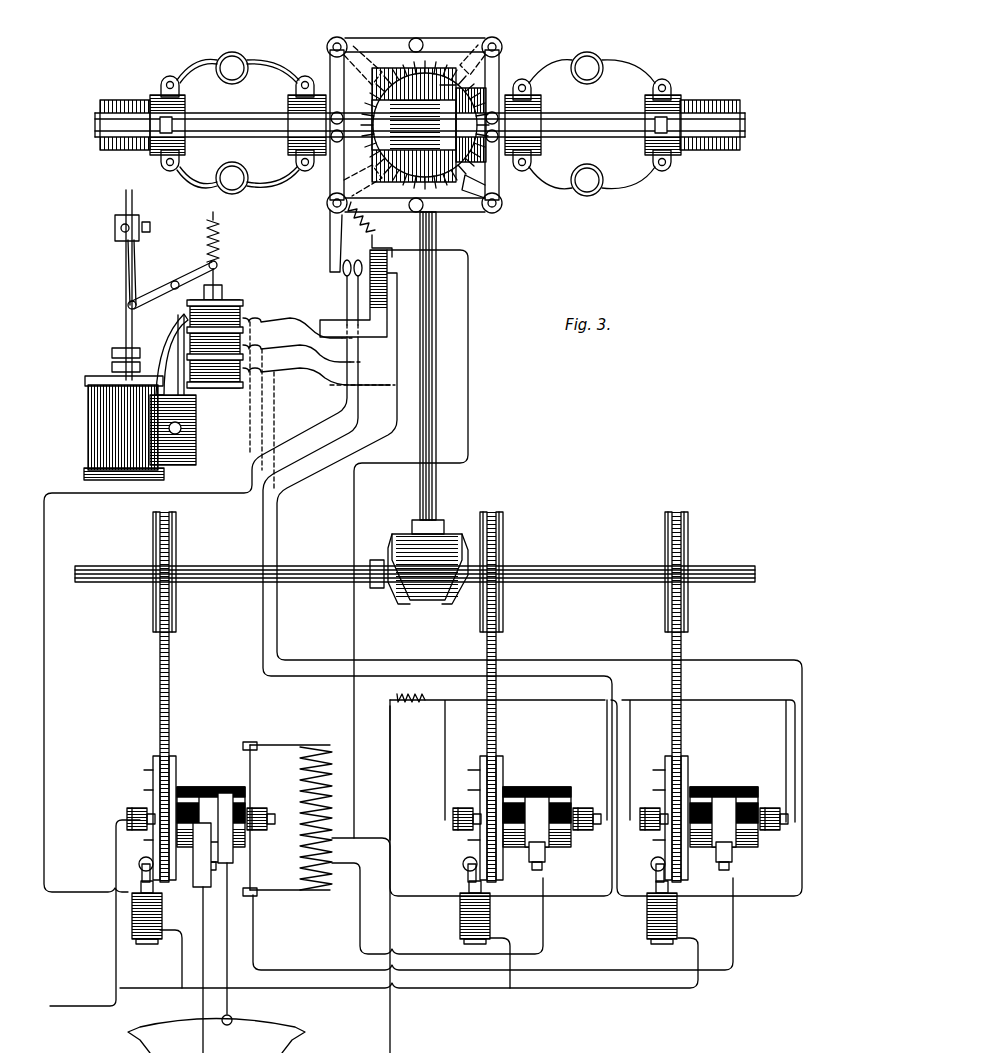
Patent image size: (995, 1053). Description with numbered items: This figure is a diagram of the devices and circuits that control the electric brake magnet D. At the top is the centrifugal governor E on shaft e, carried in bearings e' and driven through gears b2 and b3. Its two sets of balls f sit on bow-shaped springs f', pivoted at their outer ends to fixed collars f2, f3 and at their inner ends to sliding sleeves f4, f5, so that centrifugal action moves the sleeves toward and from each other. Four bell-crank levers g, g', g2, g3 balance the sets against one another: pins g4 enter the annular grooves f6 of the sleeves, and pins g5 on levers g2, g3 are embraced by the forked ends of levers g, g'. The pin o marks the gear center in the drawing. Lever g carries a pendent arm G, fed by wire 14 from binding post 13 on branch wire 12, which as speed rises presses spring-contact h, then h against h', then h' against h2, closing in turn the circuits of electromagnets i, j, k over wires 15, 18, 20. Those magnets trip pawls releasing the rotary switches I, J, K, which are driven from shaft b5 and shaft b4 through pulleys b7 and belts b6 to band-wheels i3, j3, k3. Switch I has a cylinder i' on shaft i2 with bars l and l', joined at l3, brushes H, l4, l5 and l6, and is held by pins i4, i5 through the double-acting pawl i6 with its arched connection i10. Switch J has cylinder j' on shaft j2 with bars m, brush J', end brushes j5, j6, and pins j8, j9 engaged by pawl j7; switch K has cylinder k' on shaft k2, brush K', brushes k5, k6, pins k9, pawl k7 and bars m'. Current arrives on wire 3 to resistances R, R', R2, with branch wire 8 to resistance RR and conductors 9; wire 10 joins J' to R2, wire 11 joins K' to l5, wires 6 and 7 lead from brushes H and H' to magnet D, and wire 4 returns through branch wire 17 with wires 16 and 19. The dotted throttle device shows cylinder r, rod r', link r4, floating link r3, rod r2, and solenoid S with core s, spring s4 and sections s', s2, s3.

The centrifugal governor E is at (301, 17).
The governor-shaft e is at (425, 116).
The bearings e' is at (420, 114).
The balls or weights f is at (409, 124).
The bow-shaped springs f' is at (416, 121).
The collar f2 is at (163, 95).
The collar f3 is at (668, 100).
The sliding sleeve f4 is at (290, 95).
The sliding sleeve f5 is at (535, 108).
The annular groove f6 is at (312, 80).
The bell-crank lever g' is at (354, 112).
The bell-crank lever g2 is at (500, 184).
The bell-crank lever g3 is at (492, 42).
The pins g4 is at (343, 113).
The pins g5 is at (418, 40).
The bell-crank lever g is at (342, 180).
The gear b2 is at (400, 70).
The gear b3 is at (470, 90).
The gear center o is at (428, 120).
The shaft b5 is at (436, 496).
The shaft b4 is at (580, 572).
The belt b6 is at (166, 664).
The pulley b7 is at (182, 612).
The pendent arm G is at (333, 246).
The wire 14 is at (358, 218).
The binding post or screw 13 is at (380, 248).
The spring-contact h is at (336, 298).
The second contact h' is at (352, 294).
The third contact h2 is at (380, 272).
The branch wire 12 is at (344, 712).
The wire 15 is at (342, 410).
The wire 20 is at (395, 398).
The wire 18 is at (262, 534).
The rod r' is at (121, 285).
The link r4 is at (132, 282).
The floating link r3 is at (190, 283).
The rod r2 is at (165, 318).
The cylinder r is at (124, 414).
The spring s4 is at (218, 236).
The core s is at (222, 280).
The solenoid S is at (218, 344).
The solenoid section s' is at (292, 330).
The solenoid section s2 is at (240, 372).
The solenoid section s3 is at (222, 372).
The rotary switch I is at (202, 753).
The band wheel or pulley i3 is at (172, 760).
The contact-bars l is at (222, 815).
The contact-bars l' is at (199, 807).
The drum or cylinder i' is at (225, 810).
The brush H is at (213, 855).
The pins i5 is at (137, 815).
The shaft i2 is at (261, 808).
The pins i4 is at (142, 860).
The arched connection i10 is at (140, 866).
The double-acting pawl i6 is at (139, 877).
The electromagnet i is at (152, 912).
The brush l6 is at (115, 842).
The wire 4 is at (101, 953).
The connection l3 is at (183, 865).
The brush l4 is at (250, 765).
The brush l5 is at (254, 868).
The resistance R is at (323, 818).
The resistance R' is at (361, 945).
The wire 3 is at (390, 938).
The branch wire 8 is at (392, 756).
The resistance R2 is at (437, 908).
The wire 10 is at (360, 926).
The wire 6 is at (203, 918).
The wire 7 is at (227, 940).
The wire 16 is at (181, 958).
The branch wire 17 is at (466, 994).
The magnet D is at (216, 1036).
The switch J is at (538, 753).
The conductors 9 is at (430, 726).
The resistance RR is at (403, 685).
The pulley j3 is at (500, 760).
The pins j9 is at (459, 760).
The brush J' is at (540, 822).
The contact-bars m is at (527, 825).
The contact-brush j5 is at (458, 812).
The contact-brush j6 is at (587, 805).
The shaft j2 is at (450, 830).
The pins j8 is at (462, 868).
The pawl j7 is at (466, 888).
The electromagnet j is at (480, 912).
The wire 19 is at (508, 938).
The switch K is at (727, 753).
The pulley k3 is at (688, 760).
The contact finger k9 is at (651, 811).
The drum or cylinder k' is at (724, 819).
The brush K' is at (754, 875).
The magnet core m' is at (707, 825).
The brush k5 is at (652, 808).
The brush k6 is at (774, 805).
The shaft k2 is at (784, 830).
The stem k7 is at (656, 884).
The electromagnet k is at (670, 912).
The wire 11 is at (736, 930).